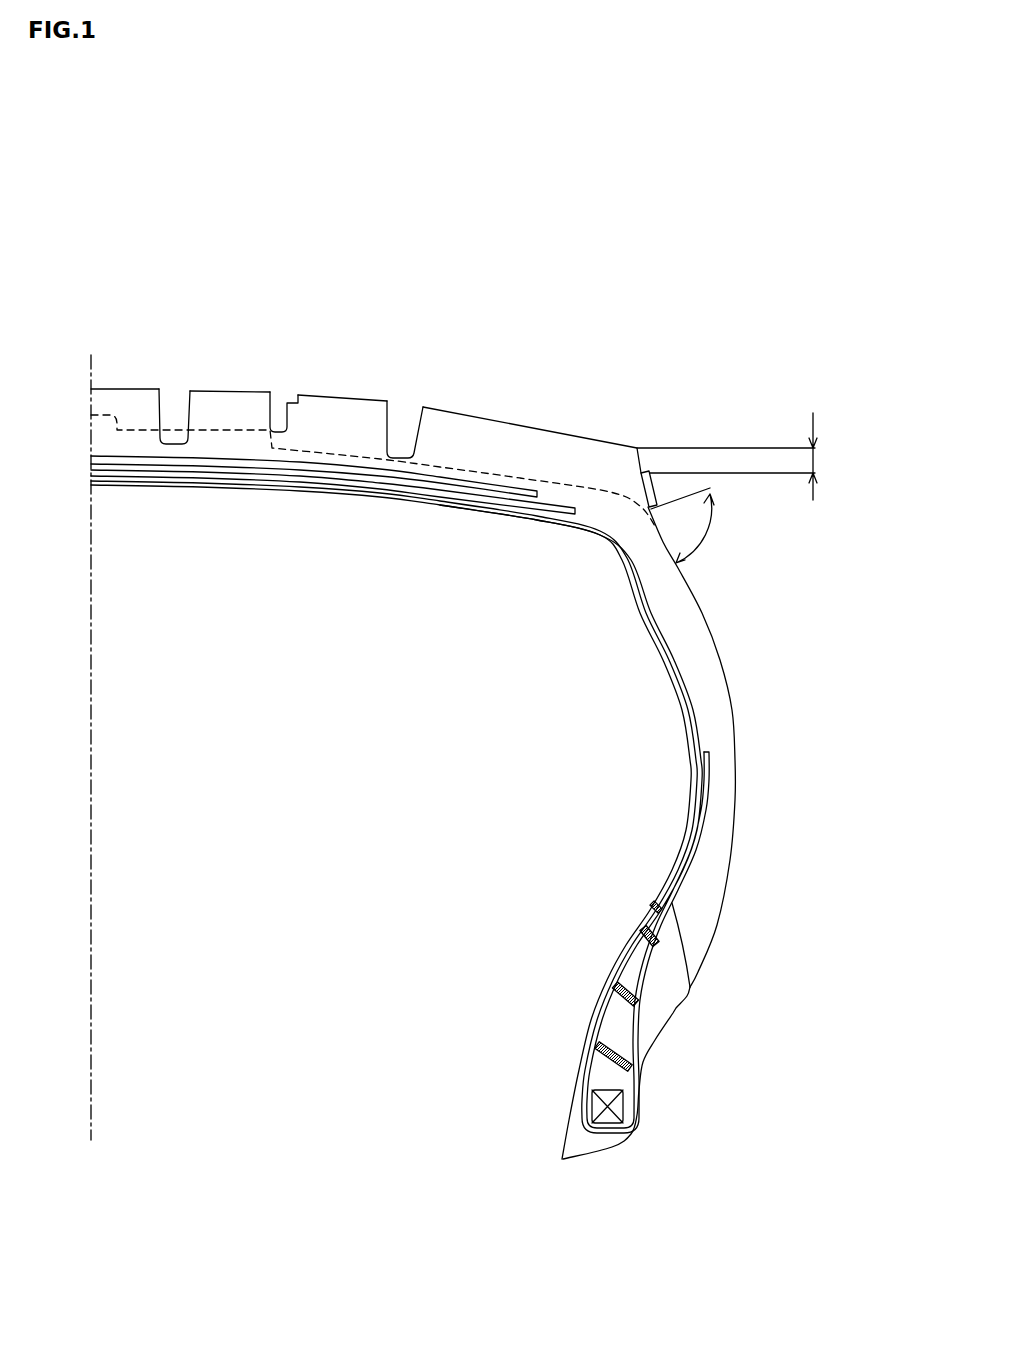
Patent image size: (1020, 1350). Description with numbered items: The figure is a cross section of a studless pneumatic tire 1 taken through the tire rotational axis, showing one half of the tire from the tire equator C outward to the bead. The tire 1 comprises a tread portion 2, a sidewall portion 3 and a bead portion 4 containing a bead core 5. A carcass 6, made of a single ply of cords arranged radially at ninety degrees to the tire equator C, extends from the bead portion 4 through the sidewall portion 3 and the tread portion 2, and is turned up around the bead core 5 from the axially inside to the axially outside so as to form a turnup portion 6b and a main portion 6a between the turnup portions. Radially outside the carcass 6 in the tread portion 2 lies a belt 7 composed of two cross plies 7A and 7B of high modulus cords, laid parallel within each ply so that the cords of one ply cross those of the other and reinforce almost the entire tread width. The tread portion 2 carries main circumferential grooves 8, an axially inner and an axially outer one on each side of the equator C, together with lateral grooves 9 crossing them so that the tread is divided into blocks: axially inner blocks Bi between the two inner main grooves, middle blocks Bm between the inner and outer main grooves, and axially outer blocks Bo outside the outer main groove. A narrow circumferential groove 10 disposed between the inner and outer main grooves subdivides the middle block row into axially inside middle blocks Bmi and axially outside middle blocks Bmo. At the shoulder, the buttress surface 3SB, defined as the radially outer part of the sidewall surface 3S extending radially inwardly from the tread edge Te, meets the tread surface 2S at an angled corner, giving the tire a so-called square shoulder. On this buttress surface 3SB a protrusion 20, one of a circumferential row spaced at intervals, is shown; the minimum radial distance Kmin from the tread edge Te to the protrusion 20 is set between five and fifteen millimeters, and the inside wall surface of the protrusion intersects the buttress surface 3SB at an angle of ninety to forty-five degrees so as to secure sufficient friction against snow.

The pneumatic tire 1 is at (651, 256).
The tread portion 2 is at (434, 258).
The tread surface 2S is at (575, 435).
The sidewall portion 3 is at (746, 734).
The surface of the sidewall portion 3S is at (702, 613).
The surface of the buttress part 3SB is at (663, 542).
The bead portion 4 is at (693, 1070).
The bead core 5 is at (595, 1108).
The carcass 6 is at (400, 820).
The main portion 6a is at (657, 906).
The turnup portion 6b is at (690, 858).
The belt 7 is at (333, 544).
The cross ply 7A is at (275, 470).
The cross ply 7B is at (217, 458).
The main circumferential groove 8 is at (178, 412).
The lateral groove 9 is at (527, 477).
The narrow circumferential groove 10 is at (276, 413).
The protrusion 20 is at (657, 490).
The tread edge Te is at (637, 447).
The tire equator C is at (90, 735).
The minimum radial distance Kmin is at (760, 456).
The axially inner block Bi is at (130, 405).
The middle block Bm is at (360, 248).
The axially inside middle block Bmi is at (243, 408).
The axially outside middle block Bmo is at (327, 417).
The axially outer block Bo is at (483, 435).